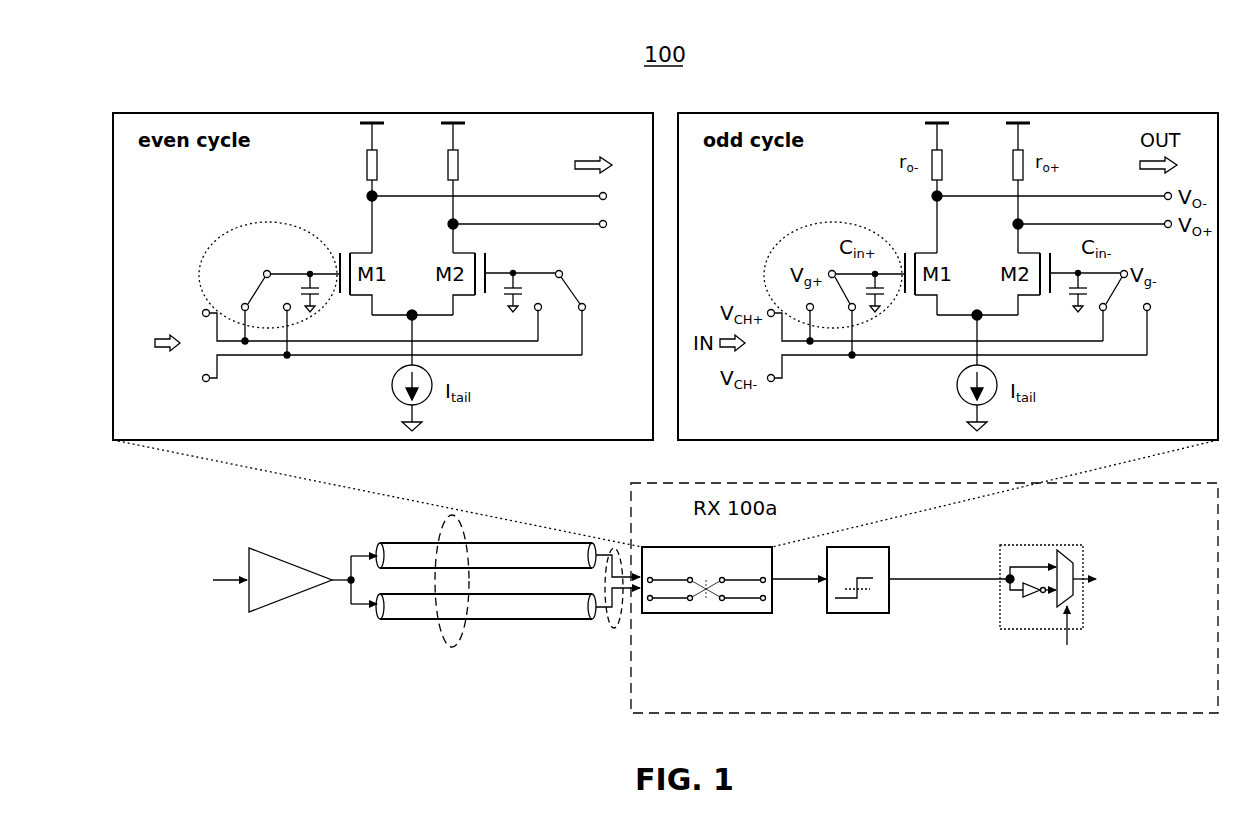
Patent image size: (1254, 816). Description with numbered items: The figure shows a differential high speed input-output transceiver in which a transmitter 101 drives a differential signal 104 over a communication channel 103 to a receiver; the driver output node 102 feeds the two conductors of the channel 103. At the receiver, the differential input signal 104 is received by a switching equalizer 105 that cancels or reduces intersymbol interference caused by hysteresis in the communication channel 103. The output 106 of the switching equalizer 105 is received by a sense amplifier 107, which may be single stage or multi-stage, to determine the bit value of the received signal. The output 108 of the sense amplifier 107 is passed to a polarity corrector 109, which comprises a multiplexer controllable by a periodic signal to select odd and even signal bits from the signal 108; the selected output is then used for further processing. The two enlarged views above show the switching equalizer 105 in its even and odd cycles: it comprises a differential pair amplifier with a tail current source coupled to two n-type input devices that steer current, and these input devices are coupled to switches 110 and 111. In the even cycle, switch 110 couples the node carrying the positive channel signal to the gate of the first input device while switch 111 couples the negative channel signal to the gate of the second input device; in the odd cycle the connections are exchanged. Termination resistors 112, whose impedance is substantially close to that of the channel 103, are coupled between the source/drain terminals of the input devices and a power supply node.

The transmitter 101 is at (270, 607).
The transmitter output node 102 is at (351, 604).
The communication channel 103 is at (452, 647).
The differential signal 104 is at (188, 360).
The switching equalizer 105 is at (715, 613).
The output of the switching equalizer 106 is at (592, 214).
The sense amplifier 107 is at (861, 613).
The output of the sense amplifier 108 is at (948, 579).
The polarity corrector 109 is at (1020, 630).
The switch 110 is at (250, 283).
The switch 111 is at (566, 288).
The termination resistors 112 is at (449, 175).